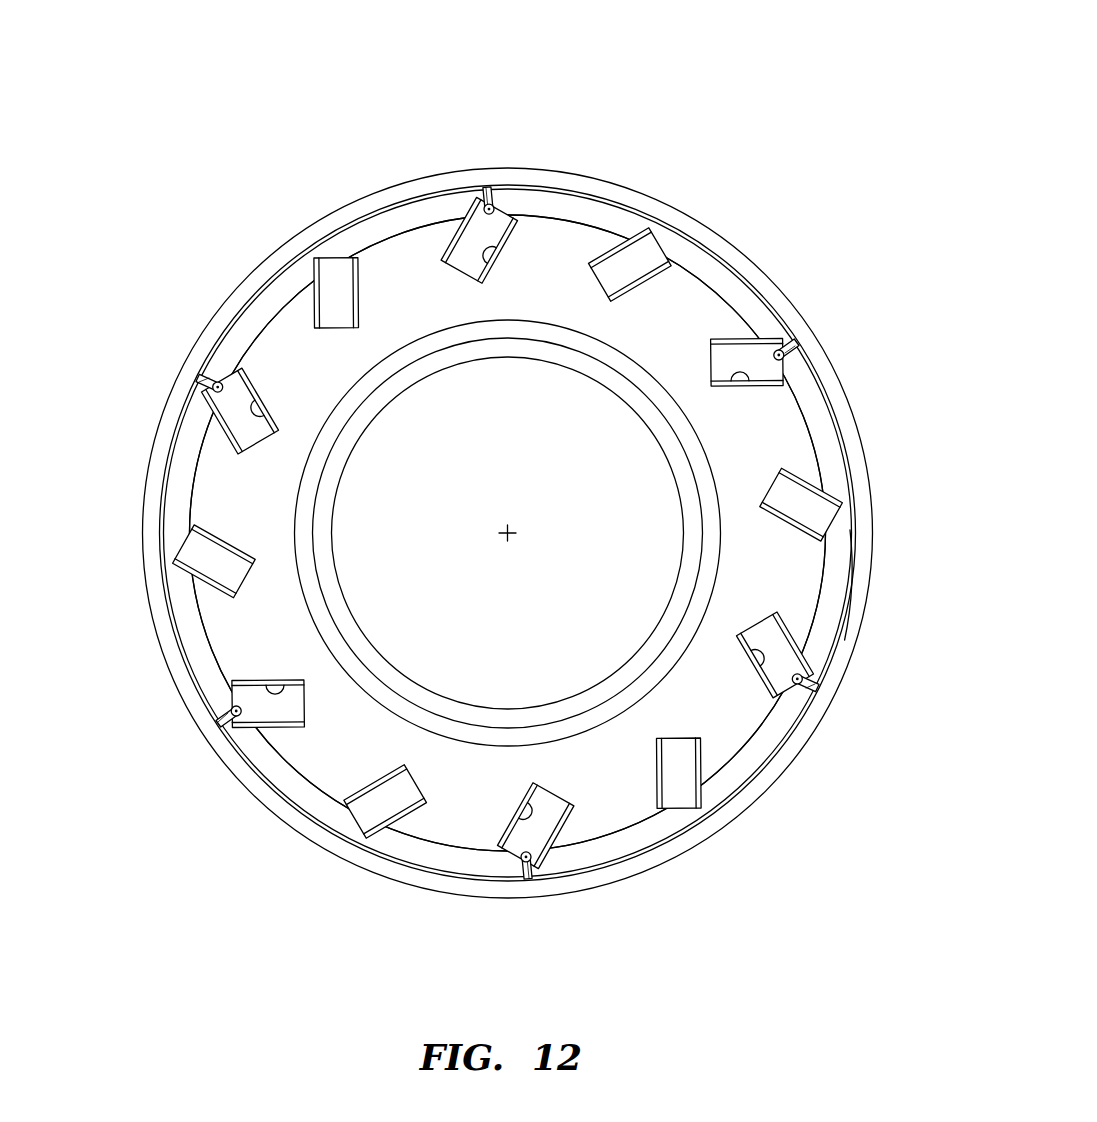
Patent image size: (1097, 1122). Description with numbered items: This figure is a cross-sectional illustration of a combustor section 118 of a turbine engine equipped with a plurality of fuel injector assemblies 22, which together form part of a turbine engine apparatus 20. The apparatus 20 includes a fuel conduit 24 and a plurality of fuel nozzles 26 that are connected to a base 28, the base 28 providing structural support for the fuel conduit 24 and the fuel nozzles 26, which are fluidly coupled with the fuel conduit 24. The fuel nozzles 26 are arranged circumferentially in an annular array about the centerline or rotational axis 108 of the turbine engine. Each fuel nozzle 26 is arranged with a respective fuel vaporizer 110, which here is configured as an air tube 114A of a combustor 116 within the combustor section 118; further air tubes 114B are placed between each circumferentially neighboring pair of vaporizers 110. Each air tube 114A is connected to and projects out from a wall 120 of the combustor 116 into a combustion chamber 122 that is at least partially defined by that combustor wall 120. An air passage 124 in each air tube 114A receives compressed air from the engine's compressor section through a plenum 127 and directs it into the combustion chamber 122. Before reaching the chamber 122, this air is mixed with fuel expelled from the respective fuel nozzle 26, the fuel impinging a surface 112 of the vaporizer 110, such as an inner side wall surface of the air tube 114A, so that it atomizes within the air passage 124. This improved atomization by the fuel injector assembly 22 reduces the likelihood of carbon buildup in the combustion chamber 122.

The apparatus for a turbine engine 20 is at (720, 86).
The fuel conduit 24 is at (758, 256).
The base 28 is at (849, 438).
The combustor section 118 is at (399, 172).
The combustor 116 is at (382, 234).
The wall of the combustor 120 is at (203, 469).
The plenum 127 is at (834, 592).
The centerline/rotational axis 108 is at (512, 533).
The combustion chamber 122 is at (378, 747).
The fuel vaporizer 110 is at (501, 533).
The air tube 114A is at (510, 242).
The air tube 114B is at (662, 280).
The surface 112 is at (493, 262).
The fuel injector assembly 22 is at (510, 520).
The fuel nozzle 26 is at (510, 191).
The air passage 124 is at (503, 218).